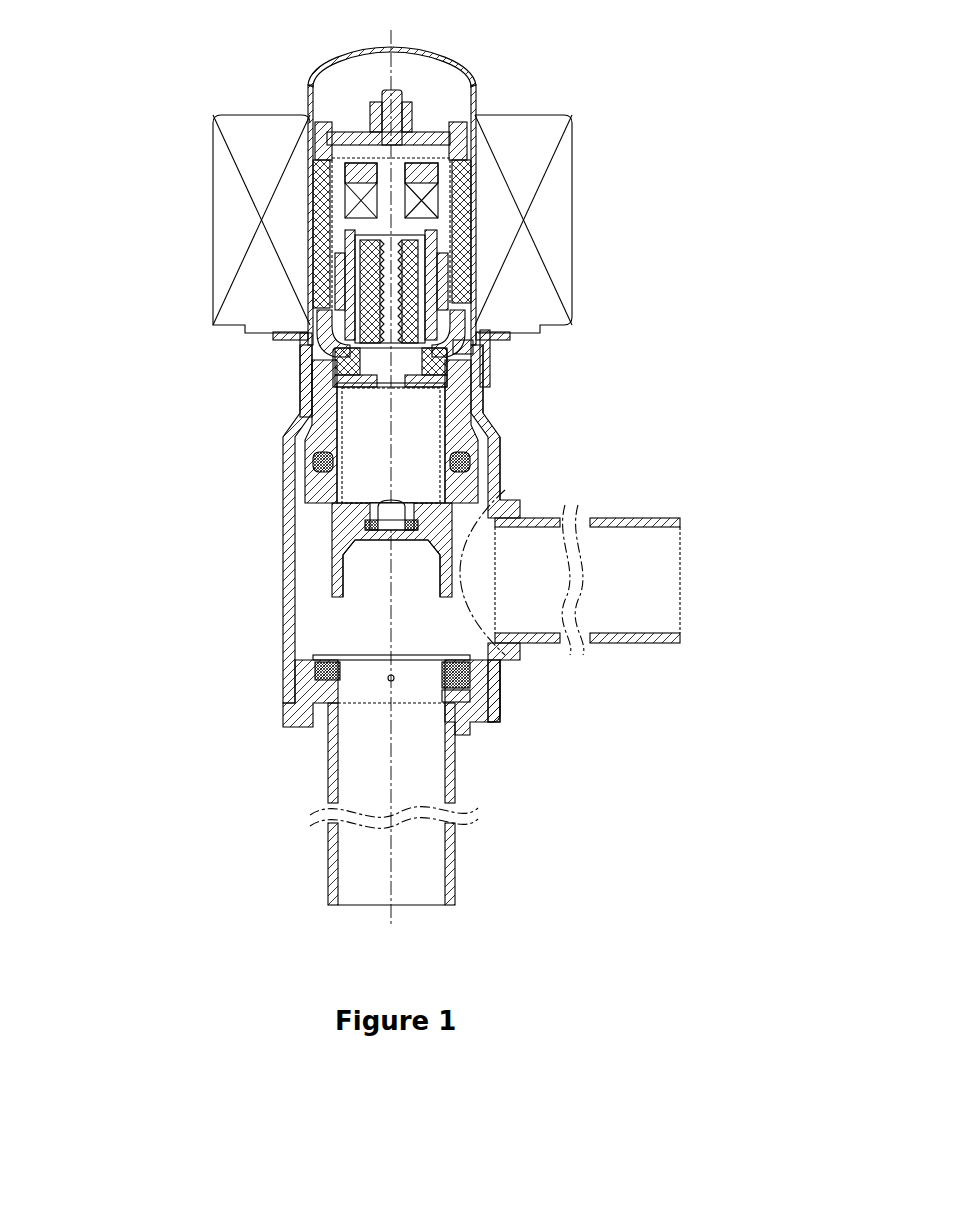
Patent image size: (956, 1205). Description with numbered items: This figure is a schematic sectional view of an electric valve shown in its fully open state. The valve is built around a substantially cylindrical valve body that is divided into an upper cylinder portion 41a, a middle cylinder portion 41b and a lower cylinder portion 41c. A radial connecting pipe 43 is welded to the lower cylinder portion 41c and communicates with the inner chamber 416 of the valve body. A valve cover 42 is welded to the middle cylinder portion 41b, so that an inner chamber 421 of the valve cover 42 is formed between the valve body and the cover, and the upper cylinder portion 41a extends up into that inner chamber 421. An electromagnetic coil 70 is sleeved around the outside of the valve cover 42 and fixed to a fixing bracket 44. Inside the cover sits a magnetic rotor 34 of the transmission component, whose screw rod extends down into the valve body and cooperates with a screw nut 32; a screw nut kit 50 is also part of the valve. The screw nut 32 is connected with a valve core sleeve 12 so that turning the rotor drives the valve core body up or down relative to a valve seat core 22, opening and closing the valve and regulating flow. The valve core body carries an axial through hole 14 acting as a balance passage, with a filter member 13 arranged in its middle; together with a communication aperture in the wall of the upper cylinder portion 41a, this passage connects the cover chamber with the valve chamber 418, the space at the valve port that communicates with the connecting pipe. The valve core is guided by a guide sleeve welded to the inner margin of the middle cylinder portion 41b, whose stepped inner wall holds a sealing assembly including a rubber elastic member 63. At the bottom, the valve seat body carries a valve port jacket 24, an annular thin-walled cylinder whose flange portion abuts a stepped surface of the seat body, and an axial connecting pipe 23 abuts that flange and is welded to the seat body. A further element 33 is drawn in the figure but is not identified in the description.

The valve core sleeve 12 is at (402, 510).
The filter member 13 is at (500, 462).
The through hole 14 is at (388, 540).
The valve seat core 22 is at (455, 673).
The axial connecting pipe 23 is at (450, 775).
The valve port jacket 24 is at (443, 695).
The screw nut 32 is at (300, 333).
The fixed iron core 33 is at (427, 207).
The magnetic rotor 34 is at (315, 142).
The upper cylinder portion 41a is at (447, 308).
The middle cylinder portion 41b is at (480, 390).
The lower cylinder portion 41c is at (503, 693).
The inner chamber of the valve body 416 is at (460, 360).
The valve chamber 418 is at (378, 678).
The valve cover 42 is at (475, 83).
The inner chamber of the valve cover 421 is at (407, 72).
The radial connecting pipe 43 is at (640, 518).
The fixing bracket 44 is at (298, 370).
The screw nut kit 50 is at (345, 235).
The elastic member 63 is at (322, 462).
The electromagnetic coil 70 is at (232, 197).